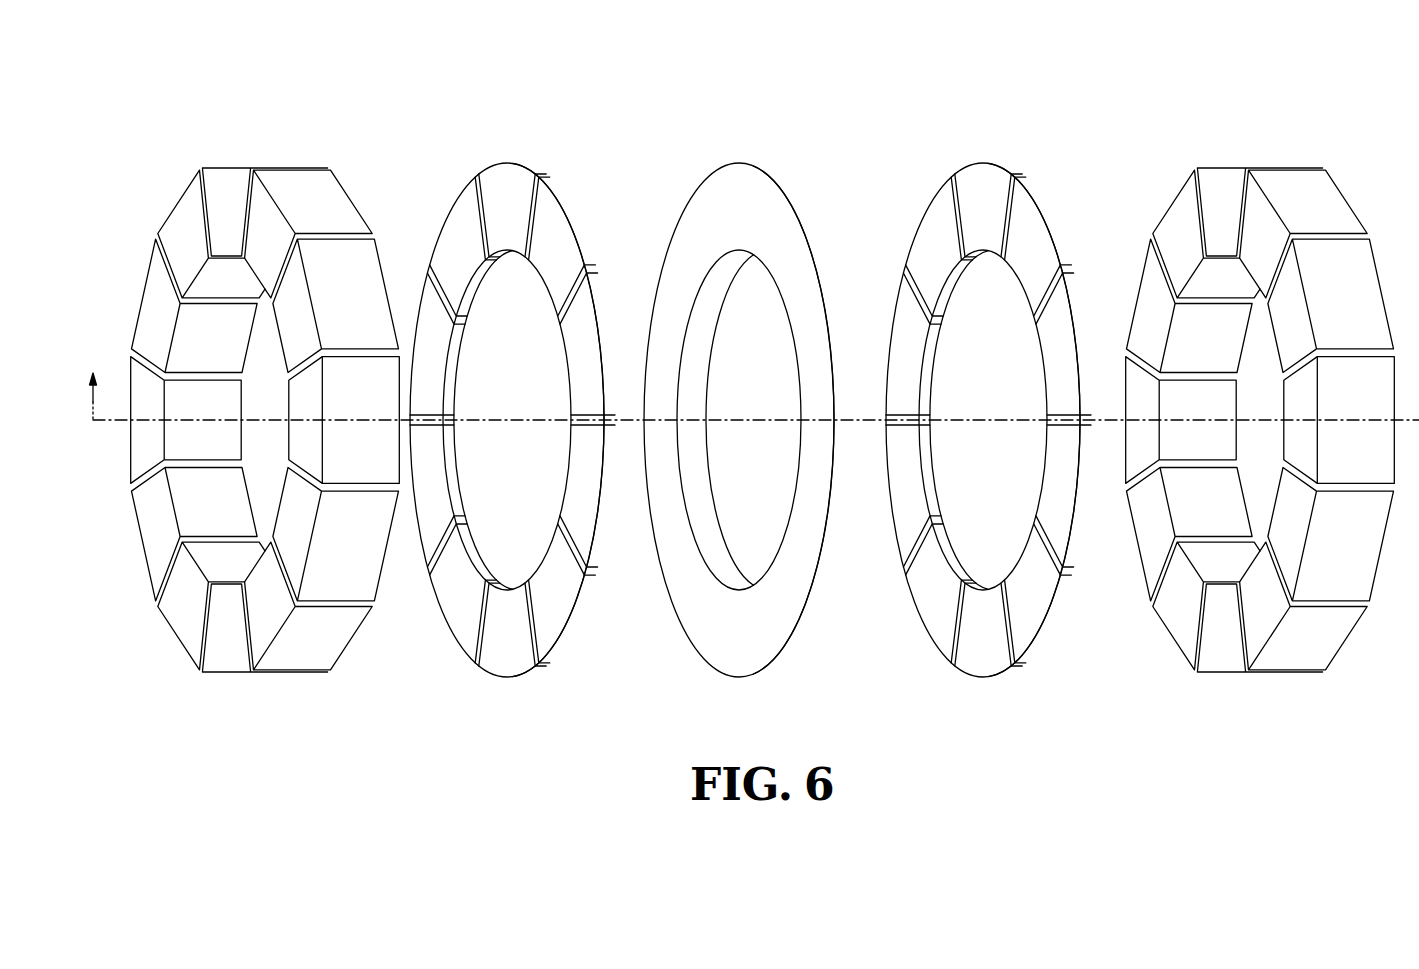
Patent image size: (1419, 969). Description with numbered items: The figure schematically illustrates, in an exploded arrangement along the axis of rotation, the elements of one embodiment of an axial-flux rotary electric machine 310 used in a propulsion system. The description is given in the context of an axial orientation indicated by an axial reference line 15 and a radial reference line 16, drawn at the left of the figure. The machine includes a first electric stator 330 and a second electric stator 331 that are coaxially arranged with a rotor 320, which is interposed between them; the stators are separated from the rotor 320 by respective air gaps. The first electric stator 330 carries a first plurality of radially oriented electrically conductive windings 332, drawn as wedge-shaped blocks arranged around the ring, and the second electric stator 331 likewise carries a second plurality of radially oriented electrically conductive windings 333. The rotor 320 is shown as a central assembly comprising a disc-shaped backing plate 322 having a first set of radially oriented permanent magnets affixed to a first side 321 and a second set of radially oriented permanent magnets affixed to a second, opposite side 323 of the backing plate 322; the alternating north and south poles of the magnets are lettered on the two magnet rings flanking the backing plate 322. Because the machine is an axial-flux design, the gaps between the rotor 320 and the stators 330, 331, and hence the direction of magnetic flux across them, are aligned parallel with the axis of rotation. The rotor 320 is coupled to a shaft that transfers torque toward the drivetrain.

The axial-flux rotary electric machine 310 is at (190, 85).
The axial reference line 15 is at (103, 407).
The radial reference line 16 is at (93, 402).
The first electric stator 330 is at (173, 228).
The first plurality of radially oriented electrically conductive windings 332 is at (343, 280).
The second electric stator 331 is at (1260, 396).
The second plurality of radially oriented electrically conductive windings 333 is at (1317, 246).
The rotor 320 is at (458, 131).
The first side 321 is at (712, 630).
The disc-shaped backing plate 322 is at (785, 223).
The second side 323 is at (833, 620).